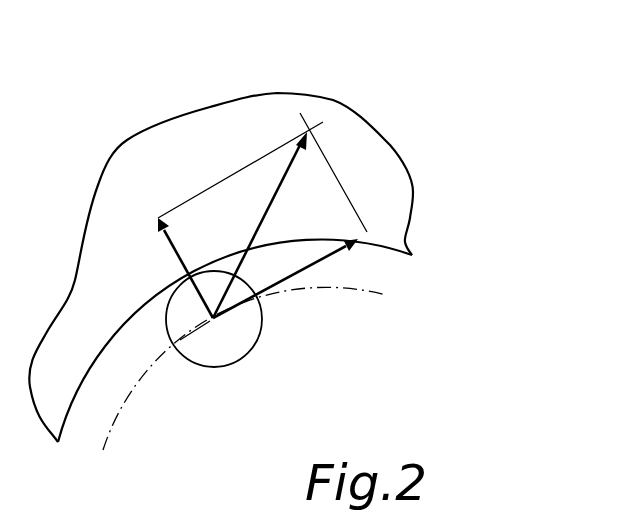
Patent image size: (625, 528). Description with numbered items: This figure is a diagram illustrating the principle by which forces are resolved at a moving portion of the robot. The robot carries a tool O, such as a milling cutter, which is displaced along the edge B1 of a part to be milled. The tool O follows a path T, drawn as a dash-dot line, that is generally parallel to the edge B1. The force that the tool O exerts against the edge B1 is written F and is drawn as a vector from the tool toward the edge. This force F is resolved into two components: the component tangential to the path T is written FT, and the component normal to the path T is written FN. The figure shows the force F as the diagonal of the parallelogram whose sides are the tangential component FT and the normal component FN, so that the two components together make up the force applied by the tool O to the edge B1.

The edge of a part to be milled B1 is at (397, 255).
The path T is at (393, 298).
The tool O is at (240, 340).
The force F is at (262, 215).
The normal force component FN is at (175, 268).
The tangential force component FT is at (291, 278).